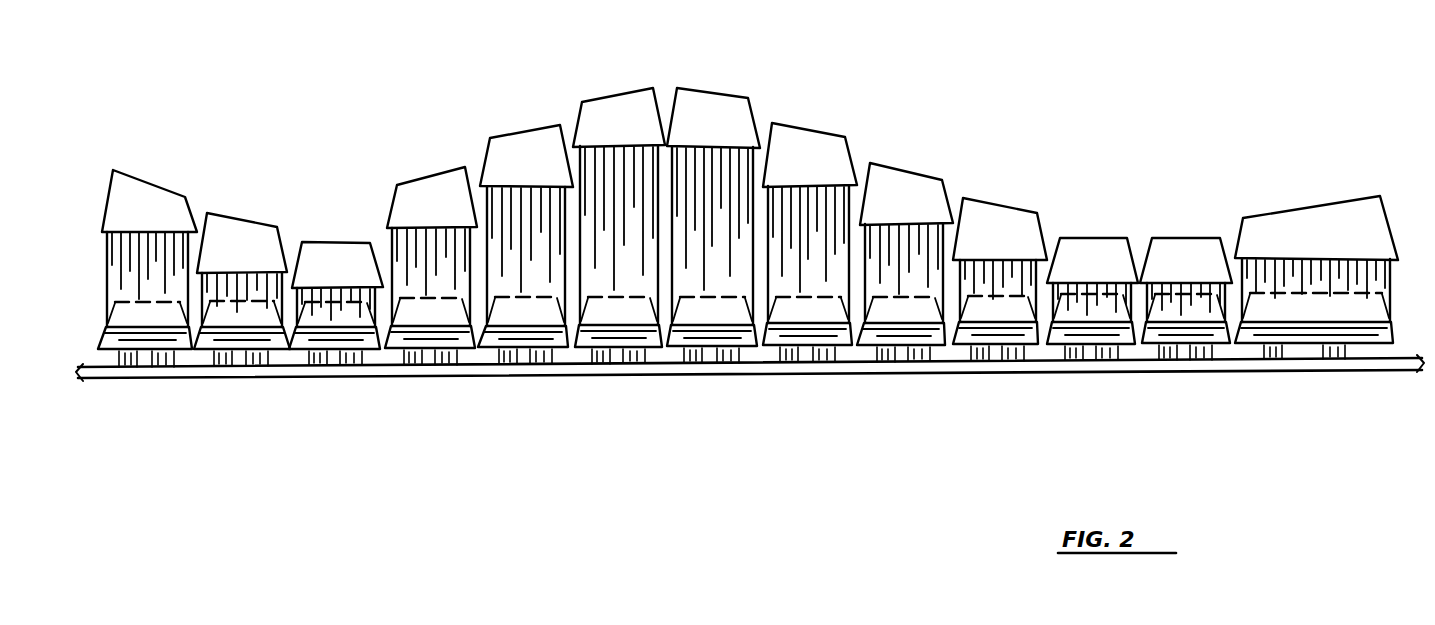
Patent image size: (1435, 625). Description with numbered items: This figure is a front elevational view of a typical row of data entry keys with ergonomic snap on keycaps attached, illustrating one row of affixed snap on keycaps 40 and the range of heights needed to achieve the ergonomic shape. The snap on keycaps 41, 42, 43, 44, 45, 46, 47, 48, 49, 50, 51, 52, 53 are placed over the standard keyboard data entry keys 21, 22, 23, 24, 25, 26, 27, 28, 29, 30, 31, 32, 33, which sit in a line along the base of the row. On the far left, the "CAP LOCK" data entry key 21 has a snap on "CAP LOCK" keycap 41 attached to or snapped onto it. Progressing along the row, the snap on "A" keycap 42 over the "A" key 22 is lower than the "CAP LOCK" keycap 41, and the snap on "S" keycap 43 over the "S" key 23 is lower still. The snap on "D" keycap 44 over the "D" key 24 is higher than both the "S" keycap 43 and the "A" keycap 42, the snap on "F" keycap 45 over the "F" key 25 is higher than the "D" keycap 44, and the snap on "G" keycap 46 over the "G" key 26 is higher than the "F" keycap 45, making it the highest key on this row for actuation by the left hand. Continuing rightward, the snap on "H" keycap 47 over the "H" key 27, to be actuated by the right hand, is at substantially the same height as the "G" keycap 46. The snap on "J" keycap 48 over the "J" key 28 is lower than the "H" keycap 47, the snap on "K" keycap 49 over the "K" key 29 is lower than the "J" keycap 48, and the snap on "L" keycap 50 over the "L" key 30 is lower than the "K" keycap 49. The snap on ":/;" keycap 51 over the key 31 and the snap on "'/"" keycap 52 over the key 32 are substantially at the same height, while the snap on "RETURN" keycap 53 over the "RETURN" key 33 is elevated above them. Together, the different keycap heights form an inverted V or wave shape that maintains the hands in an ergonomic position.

The row of affixed snap on keycaps 40 is at (93, 251).
The "CAP LOCK" data entry key 21 is at (148, 342).
The "A" data entry key 22 is at (248, 342).
The "S" data entry key 23 is at (340, 342).
The "D" data entry key 24 is at (437, 340).
The "F" data entry key 25 is at (527, 338).
The "G" data entry key 26 is at (623, 338).
The "H" data entry key 27 is at (713, 338).
The "J" data entry key 28 is at (805, 337).
The "K" data entry key 29 is at (897, 337).
The "L" data entry key 30 is at (992, 335).
The ":/;" data entry key 31 is at (1088, 335).
The "'/"" data entry key 32 is at (1183, 337).
The "RETURN" data entry key 33 is at (1308, 333).
The snap on "CAP LOCK" keycap 41 is at (148, 180).
The snap on "A" keycap 42 is at (240, 217).
The snap on "S" keycap 43 is at (330, 247).
The snap on "D" keycap 44 is at (420, 180).
The snap on "F" keycap 45 is at (517, 130).
The snap on "G" keycap 46 is at (613, 95).
The snap on "H" keycap 47 is at (717, 92).
The snap on "J" keycap 48 is at (813, 127).
The snap on "K" keycap 49 is at (915, 175).
The snap on "L" keycap 50 is at (1012, 208).
The snap on ":/;" keycap 51 is at (1100, 235).
The snap on "'/"" keycap 52 is at (1188, 237).
The snap on "RETURN" keycap 53 is at (1305, 207).